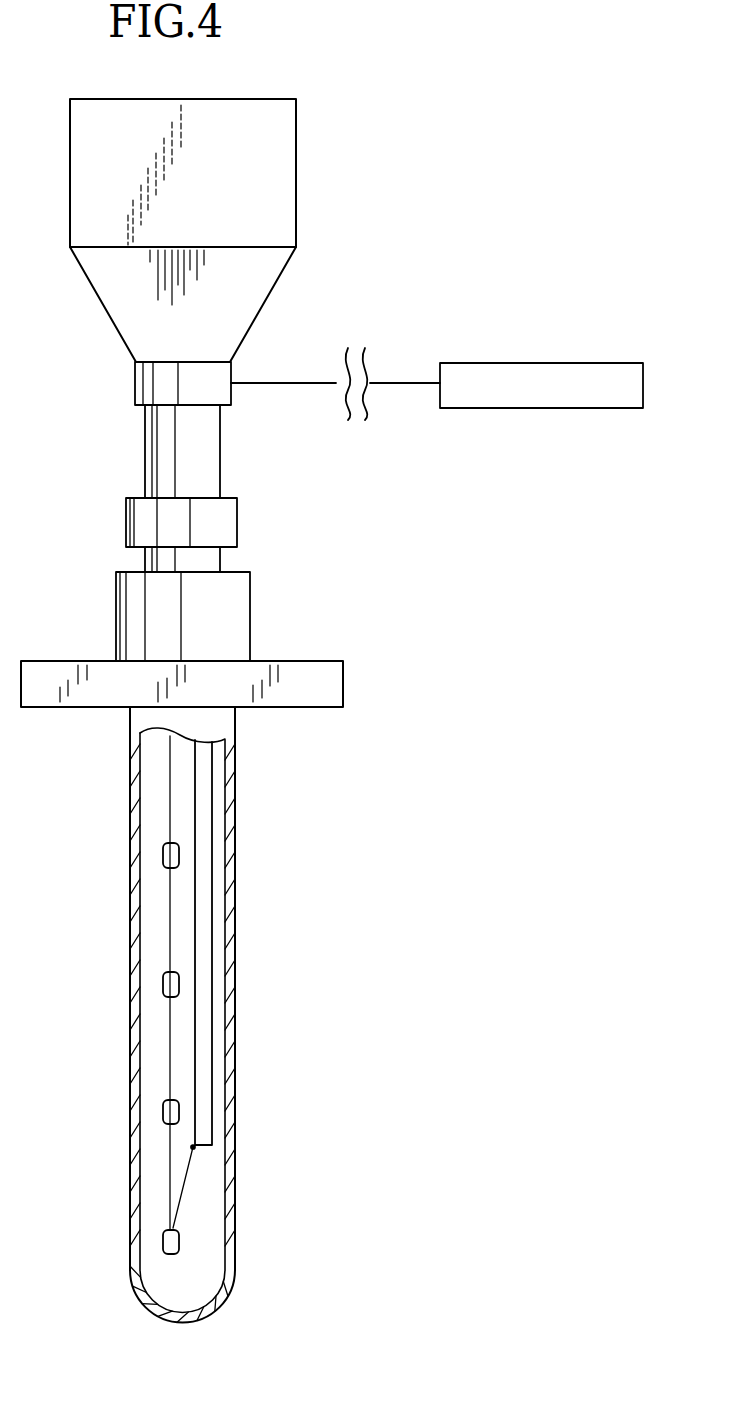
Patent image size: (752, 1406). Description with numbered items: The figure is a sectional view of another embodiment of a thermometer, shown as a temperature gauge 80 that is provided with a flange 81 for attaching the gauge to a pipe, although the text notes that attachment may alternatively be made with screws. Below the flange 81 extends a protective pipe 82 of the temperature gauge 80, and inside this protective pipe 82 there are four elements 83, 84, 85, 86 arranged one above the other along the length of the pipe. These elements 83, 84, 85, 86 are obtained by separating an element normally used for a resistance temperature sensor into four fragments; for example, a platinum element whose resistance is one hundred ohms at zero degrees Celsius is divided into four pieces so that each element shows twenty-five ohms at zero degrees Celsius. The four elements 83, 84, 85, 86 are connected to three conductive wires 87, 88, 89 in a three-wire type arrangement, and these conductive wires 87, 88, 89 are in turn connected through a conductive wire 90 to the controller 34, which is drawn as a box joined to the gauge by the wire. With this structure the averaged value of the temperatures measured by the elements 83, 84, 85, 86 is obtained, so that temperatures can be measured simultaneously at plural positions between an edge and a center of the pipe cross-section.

The temperature gauge 80 is at (240, 277).
The flange 81 is at (327, 683).
The protective pipe 82 is at (230, 1053).
The element 83 is at (175, 1243).
The element 84 is at (163, 1110).
The element 85 is at (163, 983).
The element 86 is at (163, 855).
The conductive wire 87 is at (167, 1210).
The conductive wire 88 is at (187, 1187).
The conductive wire 89 is at (212, 982).
The conductive wire 90 is at (285, 384).
The controller 34 is at (542, 408).